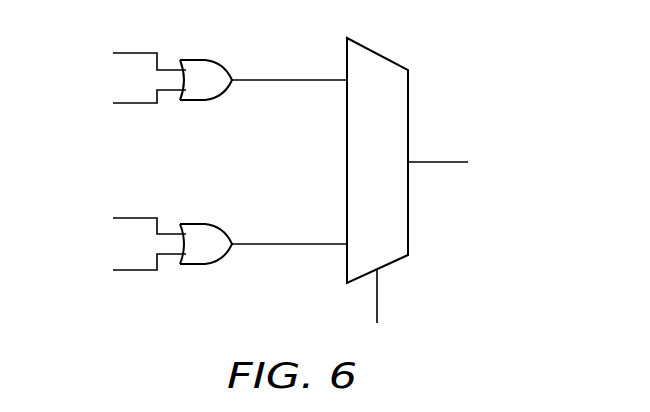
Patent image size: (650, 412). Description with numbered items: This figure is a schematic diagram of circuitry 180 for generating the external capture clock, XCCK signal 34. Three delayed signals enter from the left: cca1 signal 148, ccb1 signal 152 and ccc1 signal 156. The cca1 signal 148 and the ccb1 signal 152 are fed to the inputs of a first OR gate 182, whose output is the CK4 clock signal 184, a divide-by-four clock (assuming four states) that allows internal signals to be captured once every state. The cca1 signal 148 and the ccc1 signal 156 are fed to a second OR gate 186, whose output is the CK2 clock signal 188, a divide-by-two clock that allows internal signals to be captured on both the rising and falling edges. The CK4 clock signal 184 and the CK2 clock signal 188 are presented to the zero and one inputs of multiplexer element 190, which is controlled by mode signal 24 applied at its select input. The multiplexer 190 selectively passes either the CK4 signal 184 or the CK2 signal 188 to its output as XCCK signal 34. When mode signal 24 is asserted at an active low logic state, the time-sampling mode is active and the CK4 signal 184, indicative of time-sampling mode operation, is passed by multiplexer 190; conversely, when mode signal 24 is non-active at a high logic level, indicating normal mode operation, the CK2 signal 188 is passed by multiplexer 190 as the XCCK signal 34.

The circuitry 180 is at (478, 55).
The cca1 signal 148 is at (132, 52).
The ccb1 signal 152 is at (132, 105).
The ccc1 signal 156 is at (132, 272).
The first OR gate 182 is at (218, 58).
The CK4 clock signal 184 is at (290, 82).
The second OR gate 186 is at (217, 266).
The CK2 clock signal 188 is at (290, 246).
The multiplexer element 190 is at (398, 172).
The XCCK signal 34 is at (438, 164).
The mode signal 24 is at (378, 293).